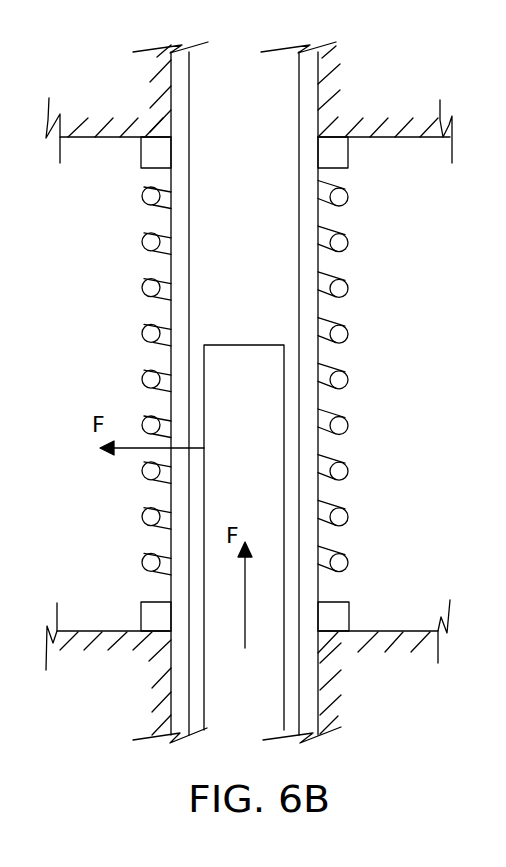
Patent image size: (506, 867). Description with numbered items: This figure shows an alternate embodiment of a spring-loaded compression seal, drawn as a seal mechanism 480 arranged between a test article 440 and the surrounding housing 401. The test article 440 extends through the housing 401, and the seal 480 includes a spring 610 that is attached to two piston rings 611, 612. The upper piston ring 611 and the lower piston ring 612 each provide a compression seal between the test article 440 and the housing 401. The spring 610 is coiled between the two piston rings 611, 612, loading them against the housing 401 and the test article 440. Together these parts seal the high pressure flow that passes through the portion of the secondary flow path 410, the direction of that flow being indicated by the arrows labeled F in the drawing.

The housing 401 is at (78, 130).
The test article 440 is at (190, 78).
The secondary flow path 410 is at (104, 307).
The piston ring 611 is at (141, 153).
The piston ring 612 is at (147, 600).
The spring 610 is at (348, 289).
The seal mechanism 480 is at (405, 393).